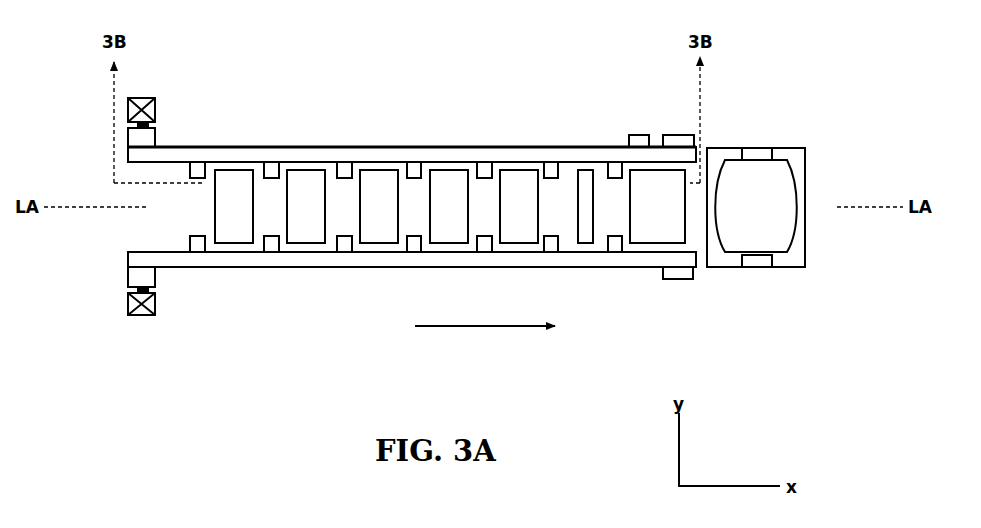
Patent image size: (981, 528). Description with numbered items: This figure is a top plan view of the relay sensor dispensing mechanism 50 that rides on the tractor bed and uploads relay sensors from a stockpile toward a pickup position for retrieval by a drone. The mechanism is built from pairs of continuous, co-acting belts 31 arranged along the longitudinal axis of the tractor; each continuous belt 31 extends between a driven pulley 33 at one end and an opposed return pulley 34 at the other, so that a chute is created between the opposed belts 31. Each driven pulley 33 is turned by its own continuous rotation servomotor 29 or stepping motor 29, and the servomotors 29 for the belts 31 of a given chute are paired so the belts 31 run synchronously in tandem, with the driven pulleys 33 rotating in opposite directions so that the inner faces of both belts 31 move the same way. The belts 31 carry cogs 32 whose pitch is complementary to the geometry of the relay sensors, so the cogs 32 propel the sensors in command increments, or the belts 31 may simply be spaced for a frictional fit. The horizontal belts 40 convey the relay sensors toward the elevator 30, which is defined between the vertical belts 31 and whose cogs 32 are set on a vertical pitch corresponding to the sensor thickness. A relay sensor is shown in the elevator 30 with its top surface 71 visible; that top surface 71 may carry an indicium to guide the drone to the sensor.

The servomotor 29 is at (146, 103).
The elevator 30 is at (795, 152).
The continuous belt 31 is at (465, 147).
The cog 32 is at (345, 168).
The driven pulley 33 is at (150, 138).
The return pulley 34 is at (678, 140).
The belt 40 is at (265, 380).
The relay sensor dispensing mechanism 50 is at (585, 380).
The top surface 71 is at (756, 206).